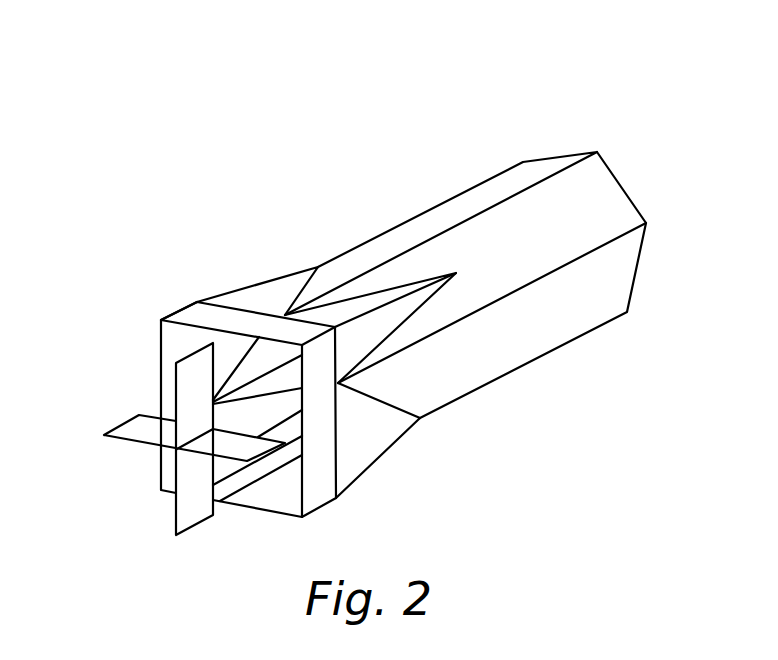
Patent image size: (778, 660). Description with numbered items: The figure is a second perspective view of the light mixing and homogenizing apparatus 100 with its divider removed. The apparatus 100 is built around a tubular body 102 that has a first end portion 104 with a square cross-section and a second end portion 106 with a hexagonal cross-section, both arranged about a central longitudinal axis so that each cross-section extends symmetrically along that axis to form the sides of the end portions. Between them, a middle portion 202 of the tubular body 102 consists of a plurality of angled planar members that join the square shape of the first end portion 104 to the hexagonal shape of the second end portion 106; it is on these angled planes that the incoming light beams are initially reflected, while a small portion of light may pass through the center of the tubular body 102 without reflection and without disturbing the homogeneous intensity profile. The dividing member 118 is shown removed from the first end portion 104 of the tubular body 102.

The light mixing and homogenizing apparatus 100 is at (336, 341).
The first end portion 104 is at (136, 308).
The middle portion 202 is at (311, 243).
The second end portion 106 is at (529, 117).
The tubular body 102 is at (534, 407).
The dividing member 118 is at (173, 522).